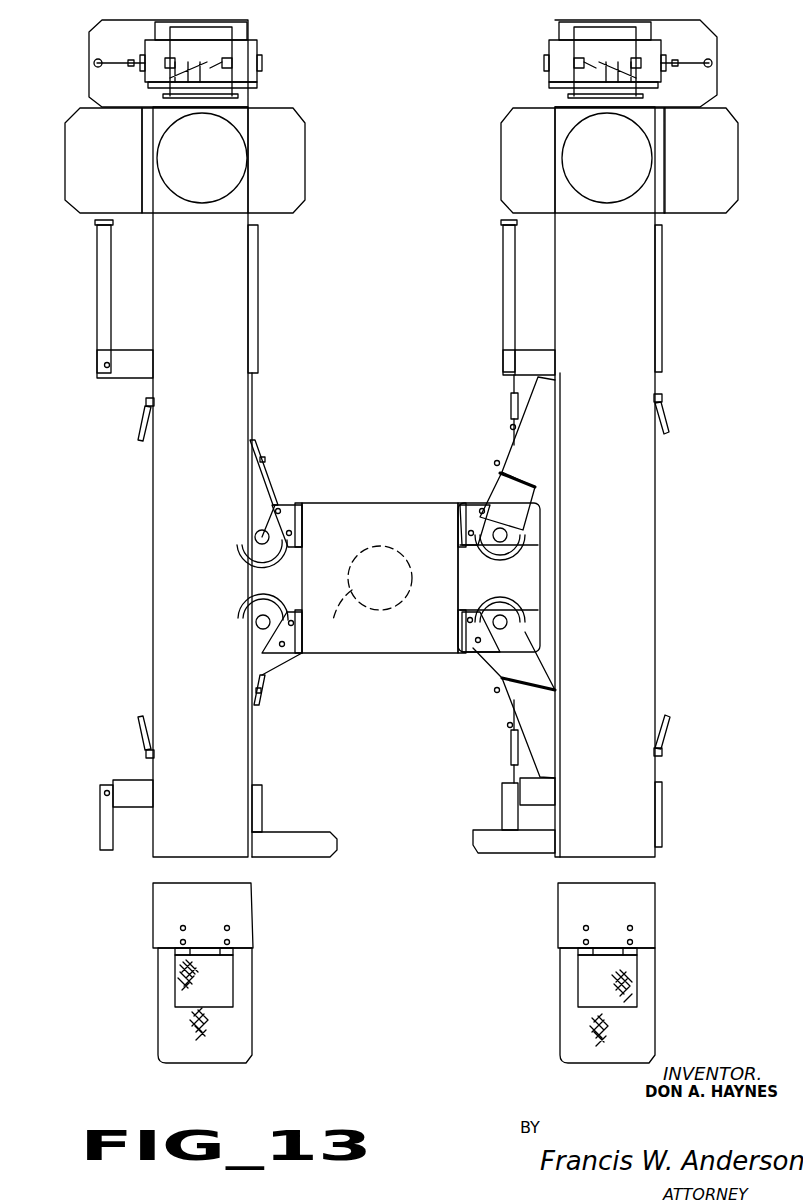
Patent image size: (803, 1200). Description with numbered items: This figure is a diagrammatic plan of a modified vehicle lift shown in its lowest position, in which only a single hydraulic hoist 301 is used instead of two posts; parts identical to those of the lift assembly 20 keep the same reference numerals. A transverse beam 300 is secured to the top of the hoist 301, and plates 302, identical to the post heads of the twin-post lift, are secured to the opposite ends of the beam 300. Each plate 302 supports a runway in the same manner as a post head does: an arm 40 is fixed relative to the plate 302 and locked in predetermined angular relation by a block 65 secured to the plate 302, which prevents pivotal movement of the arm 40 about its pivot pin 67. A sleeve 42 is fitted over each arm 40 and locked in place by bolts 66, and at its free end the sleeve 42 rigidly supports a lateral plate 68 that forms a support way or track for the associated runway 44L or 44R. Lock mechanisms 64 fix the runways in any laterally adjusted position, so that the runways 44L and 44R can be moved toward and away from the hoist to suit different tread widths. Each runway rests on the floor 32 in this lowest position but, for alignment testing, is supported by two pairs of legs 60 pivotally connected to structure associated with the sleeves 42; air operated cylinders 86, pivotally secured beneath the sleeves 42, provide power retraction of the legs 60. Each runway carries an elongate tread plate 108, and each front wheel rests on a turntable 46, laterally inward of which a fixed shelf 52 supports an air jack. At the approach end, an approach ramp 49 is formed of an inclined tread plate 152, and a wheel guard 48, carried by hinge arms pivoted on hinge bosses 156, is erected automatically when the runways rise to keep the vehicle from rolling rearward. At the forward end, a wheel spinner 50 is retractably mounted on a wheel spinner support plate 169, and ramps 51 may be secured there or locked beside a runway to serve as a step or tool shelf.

The lift assembly 20 is at (85, 905).
The floor 32 is at (356, 731).
The arm 40 is at (275, 488).
The sleeve 42 is at (252, 468).
The left runway 44L is at (152, 466).
The right runway 44R is at (657, 495).
The turntable 46 is at (188, 163).
The wheel guard 48 is at (178, 989).
The approach ramp 49 is at (160, 1035).
The wheel spinner 50 is at (210, 68).
The ramp 51 is at (86, 171).
The fixed shelf 52 is at (261, 171).
The support leg 60 is at (106, 300).
The lock mechanism 64 is at (148, 404).
The block 65 is at (300, 504).
The bolt 66 is at (264, 458).
The pivot pin 67 is at (262, 538).
The lateral plate 68 is at (130, 374).
The air operated cylinder 86 is at (511, 408).
The tread plate 108 is at (177, 521).
The inclined tread plate 152 is at (235, 1035).
The hinge boss 156 is at (203, 950).
The wheel spinner support plate 169 is at (112, 45).
The transverse beam 300 is at (385, 503).
The hydraulic hoist 301 is at (364, 595).
The plate 302 is at (303, 550).